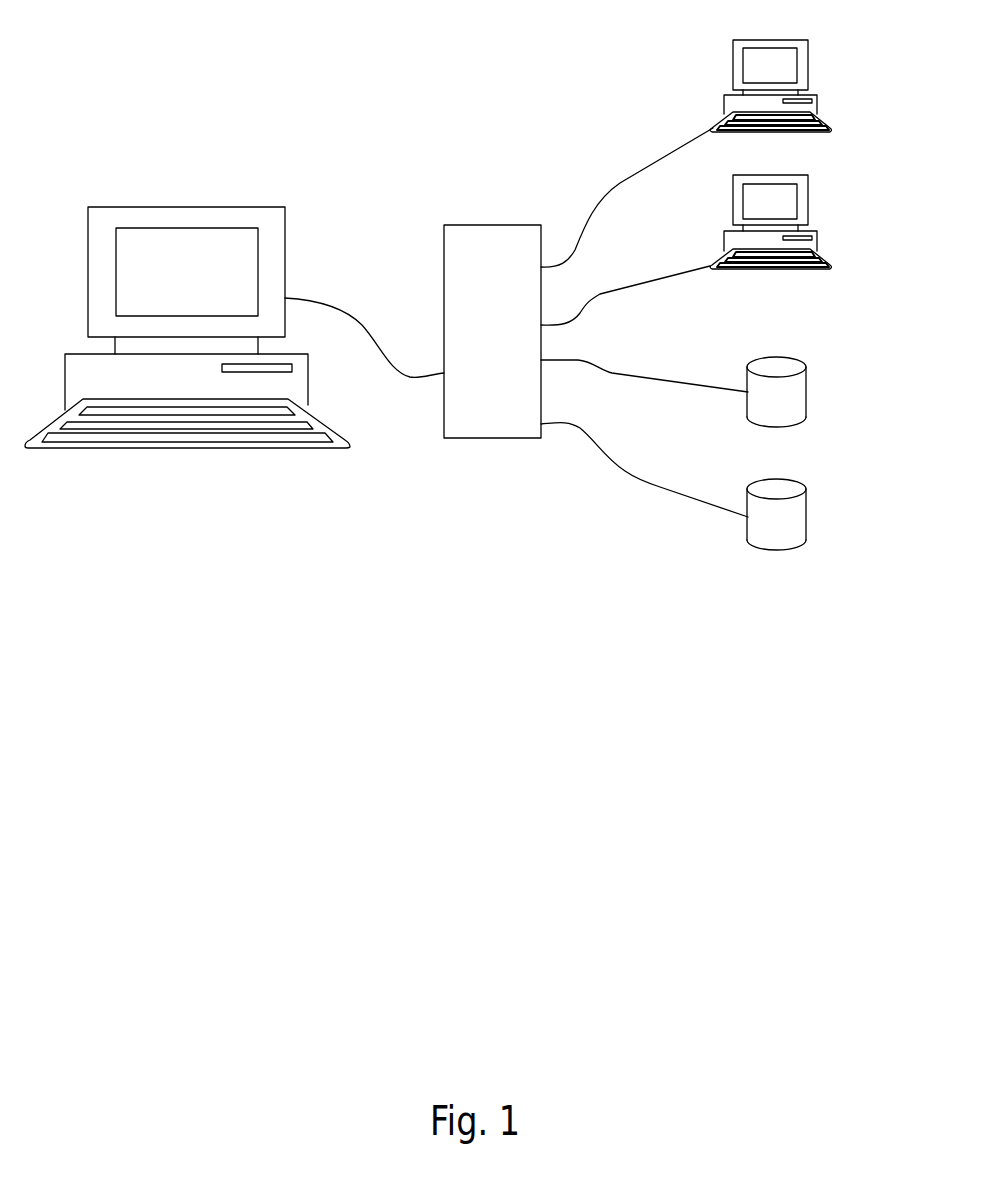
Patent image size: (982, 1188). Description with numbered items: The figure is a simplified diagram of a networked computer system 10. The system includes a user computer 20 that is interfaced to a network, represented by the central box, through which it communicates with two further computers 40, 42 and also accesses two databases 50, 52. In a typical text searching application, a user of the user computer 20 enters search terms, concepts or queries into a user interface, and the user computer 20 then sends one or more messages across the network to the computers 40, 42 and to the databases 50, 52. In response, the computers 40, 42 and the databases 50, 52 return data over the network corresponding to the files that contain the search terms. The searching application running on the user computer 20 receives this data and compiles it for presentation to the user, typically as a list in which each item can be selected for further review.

The networked computer system 10 is at (414, 110).
The user computer 20 is at (193, 207).
The computer 40 is at (808, 63).
The computer 42 is at (808, 204).
The database 50 is at (806, 396).
The database 52 is at (806, 507).